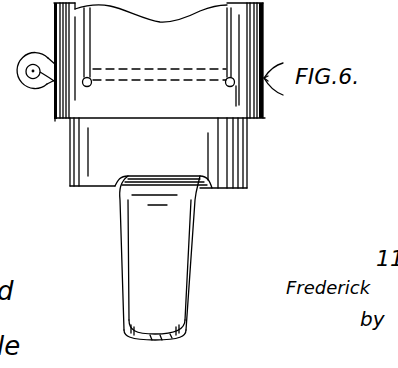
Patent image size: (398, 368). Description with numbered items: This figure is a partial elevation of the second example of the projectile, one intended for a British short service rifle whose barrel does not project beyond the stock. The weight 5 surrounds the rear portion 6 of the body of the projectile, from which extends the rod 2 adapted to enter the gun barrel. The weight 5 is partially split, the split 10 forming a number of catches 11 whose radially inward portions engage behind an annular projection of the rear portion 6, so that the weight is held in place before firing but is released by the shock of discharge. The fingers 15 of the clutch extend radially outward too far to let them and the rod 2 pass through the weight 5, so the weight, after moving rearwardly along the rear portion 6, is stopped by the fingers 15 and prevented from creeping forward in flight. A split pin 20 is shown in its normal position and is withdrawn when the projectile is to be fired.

The split 10 is at (83, 30).
The catches 11 is at (160, 63).
The split pin 20 is at (50, 83).
The weight 5 is at (245, 100).
The rear portion of the body of the projectile 6 is at (222, 143).
The fingers of the clutch 15 is at (173, 253).
The rod 2 is at (178, 320).